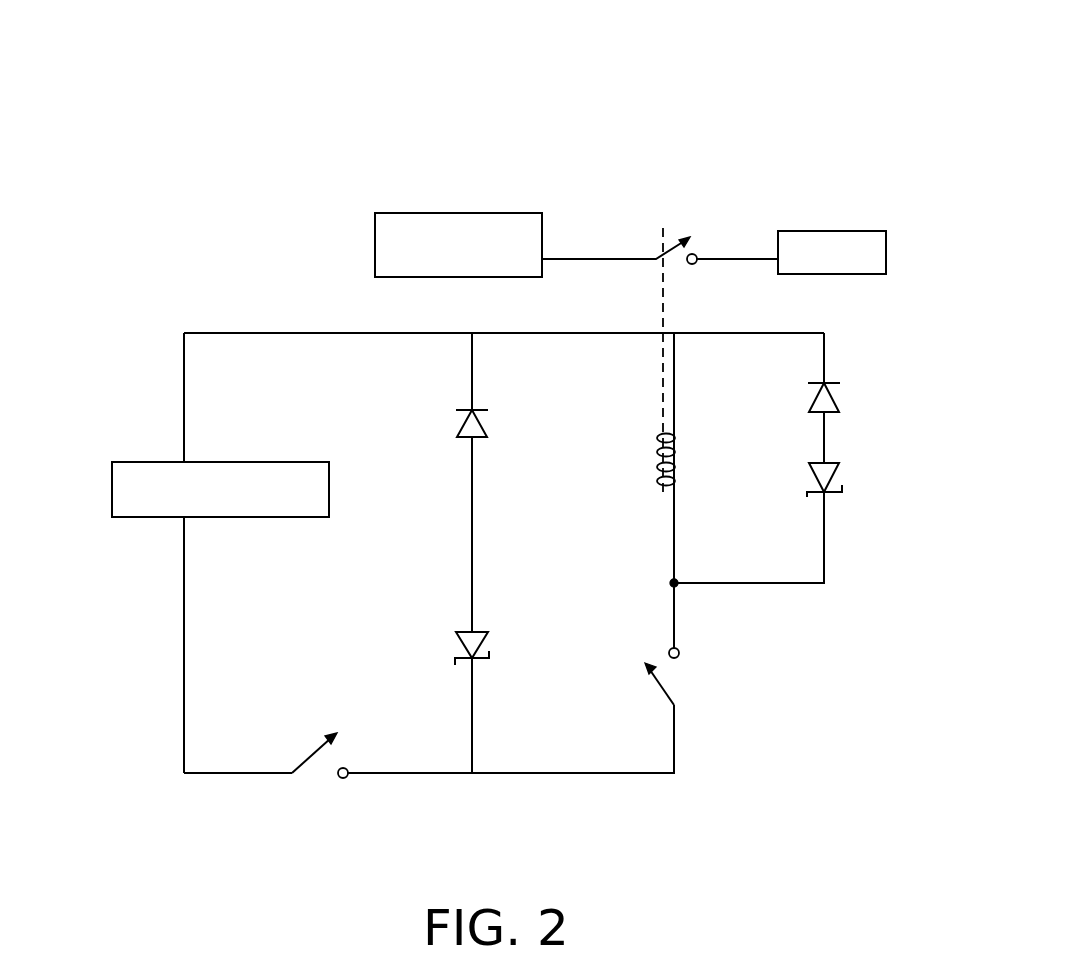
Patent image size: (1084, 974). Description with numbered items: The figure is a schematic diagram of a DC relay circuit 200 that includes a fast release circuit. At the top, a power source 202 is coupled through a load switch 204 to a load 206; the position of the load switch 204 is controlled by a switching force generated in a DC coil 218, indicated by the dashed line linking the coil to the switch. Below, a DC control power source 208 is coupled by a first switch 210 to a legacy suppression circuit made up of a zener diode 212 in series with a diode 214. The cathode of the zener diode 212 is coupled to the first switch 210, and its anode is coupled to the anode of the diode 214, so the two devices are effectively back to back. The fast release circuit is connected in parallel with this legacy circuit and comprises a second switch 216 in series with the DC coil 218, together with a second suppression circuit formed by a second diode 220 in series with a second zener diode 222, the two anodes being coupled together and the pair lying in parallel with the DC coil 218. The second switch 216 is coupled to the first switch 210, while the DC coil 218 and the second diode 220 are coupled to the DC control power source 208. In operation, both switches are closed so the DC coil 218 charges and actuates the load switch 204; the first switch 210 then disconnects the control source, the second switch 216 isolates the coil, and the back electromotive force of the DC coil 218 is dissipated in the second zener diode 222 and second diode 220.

The DC relay circuit 200 is at (745, 88).
The power source 202 is at (528, 213).
The load switch 204 is at (658, 256).
The load 206 is at (870, 231).
The DC control power source 208 is at (142, 462).
The first switch 210 is at (318, 752).
The zener diode 212 is at (477, 633).
The diode 214 is at (487, 433).
The second switch 216 is at (661, 688).
The DC coil 218 is at (658, 450).
The second diode 220 is at (838, 406).
The second zener diode 222 is at (830, 462).